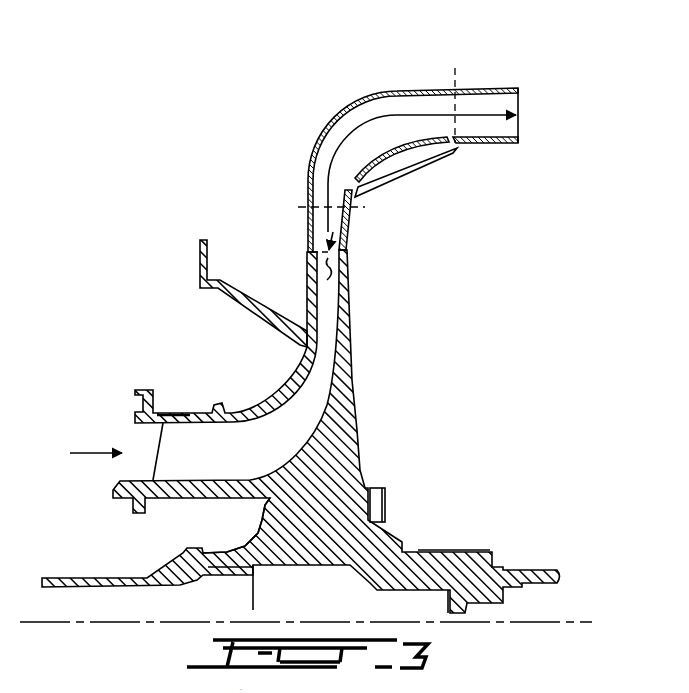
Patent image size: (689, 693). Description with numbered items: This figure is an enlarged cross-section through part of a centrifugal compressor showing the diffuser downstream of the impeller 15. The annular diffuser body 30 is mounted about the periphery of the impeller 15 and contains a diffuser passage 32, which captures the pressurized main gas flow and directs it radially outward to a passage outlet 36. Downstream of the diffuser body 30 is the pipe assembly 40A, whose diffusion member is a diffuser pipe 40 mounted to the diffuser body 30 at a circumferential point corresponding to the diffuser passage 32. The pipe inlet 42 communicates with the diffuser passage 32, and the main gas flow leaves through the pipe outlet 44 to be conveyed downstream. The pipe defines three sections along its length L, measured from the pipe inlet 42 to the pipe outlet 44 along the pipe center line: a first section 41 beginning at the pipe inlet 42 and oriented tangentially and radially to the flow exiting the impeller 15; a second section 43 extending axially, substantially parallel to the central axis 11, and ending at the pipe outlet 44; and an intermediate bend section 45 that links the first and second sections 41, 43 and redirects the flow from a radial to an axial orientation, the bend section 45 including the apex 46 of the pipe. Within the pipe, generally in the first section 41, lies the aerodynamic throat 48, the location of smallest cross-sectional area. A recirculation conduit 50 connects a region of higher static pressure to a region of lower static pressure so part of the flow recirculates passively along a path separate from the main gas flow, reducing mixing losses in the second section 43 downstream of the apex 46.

The central axis 11 is at (582, 622).
The impeller 15 is at (255, 500).
The annular diffuser body 30 is at (349, 281).
The diffuser passage 32 is at (325, 297).
The passage outlet 36 is at (348, 259).
The diffuser pipe 40 is at (324, 106).
The pipe assembly 40A is at (280, 108).
The first section 41 is at (300, 209).
The pipe inlet 42 is at (335, 232).
The second section 43 is at (468, 95).
The pipe outlet 44 is at (518, 100).
The bend section 45 is at (367, 88).
The apex 46 is at (372, 166).
The aerodynamic throat 48 is at (327, 232).
The recirculation conduit 50 is at (432, 171).
The length L is at (491, 113).